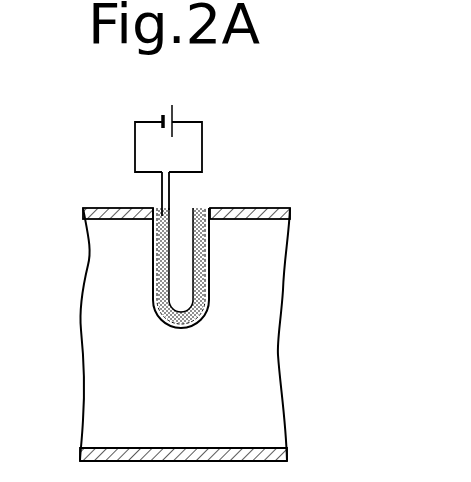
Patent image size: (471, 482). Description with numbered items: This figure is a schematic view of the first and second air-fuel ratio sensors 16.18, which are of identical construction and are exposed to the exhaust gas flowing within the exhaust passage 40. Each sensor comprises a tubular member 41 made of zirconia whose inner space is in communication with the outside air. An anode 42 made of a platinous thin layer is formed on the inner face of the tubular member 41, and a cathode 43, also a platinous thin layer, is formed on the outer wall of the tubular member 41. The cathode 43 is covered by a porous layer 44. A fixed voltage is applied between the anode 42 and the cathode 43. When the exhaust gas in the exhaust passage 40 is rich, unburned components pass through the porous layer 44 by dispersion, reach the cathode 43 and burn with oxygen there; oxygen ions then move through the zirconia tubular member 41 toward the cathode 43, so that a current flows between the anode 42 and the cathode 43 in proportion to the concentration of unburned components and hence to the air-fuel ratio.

The exhaust passage 40 is at (272, 375).
The tubular member 41 is at (197, 324).
The anode 42 is at (174, 233).
The cathode 43 is at (166, 326).
The porous layer 44 is at (152, 282).
The first and second air-fuel ratio sensors 16.18 is at (207, 260).